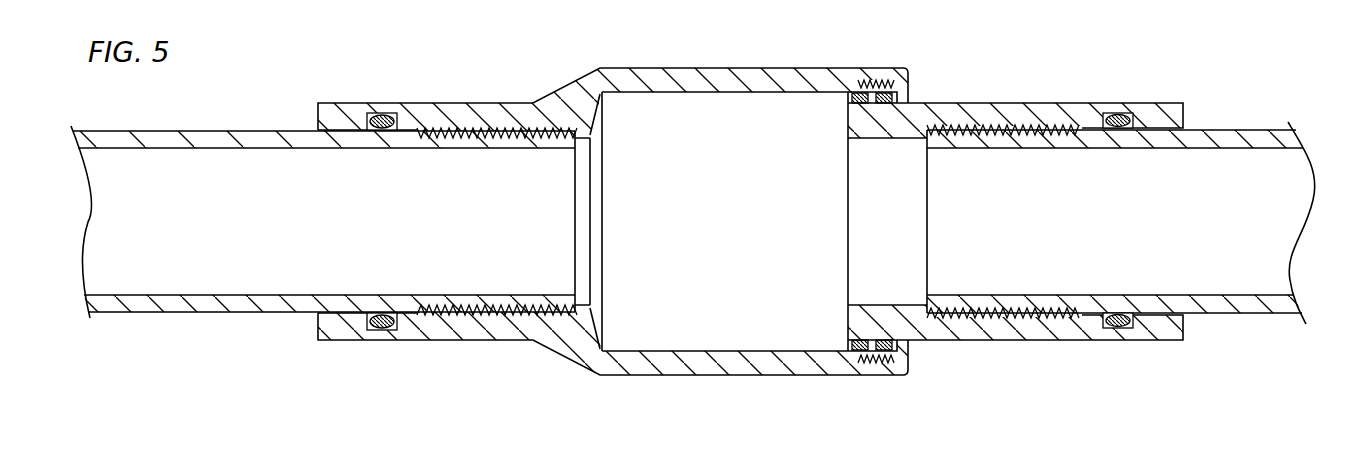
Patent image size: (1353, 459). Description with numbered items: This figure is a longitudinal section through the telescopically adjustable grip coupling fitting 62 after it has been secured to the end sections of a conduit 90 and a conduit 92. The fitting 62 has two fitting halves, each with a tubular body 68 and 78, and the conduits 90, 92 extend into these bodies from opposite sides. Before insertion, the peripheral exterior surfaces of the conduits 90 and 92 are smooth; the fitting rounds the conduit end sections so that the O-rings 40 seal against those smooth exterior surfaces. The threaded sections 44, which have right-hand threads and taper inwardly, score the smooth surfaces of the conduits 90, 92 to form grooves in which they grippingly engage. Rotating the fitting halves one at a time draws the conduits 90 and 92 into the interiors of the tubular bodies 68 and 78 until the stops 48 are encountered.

The O-ring 40 is at (382, 331).
The threaded section 44 is at (457, 318).
The stop 48 is at (582, 140).
The telescopically adjustable grip coupling fitting 62 is at (616, 379).
The tubular body 68 is at (1027, 341).
The tubular body 78 is at (575, 97).
The conduit 90 is at (1262, 306).
The conduit 92 is at (236, 318).